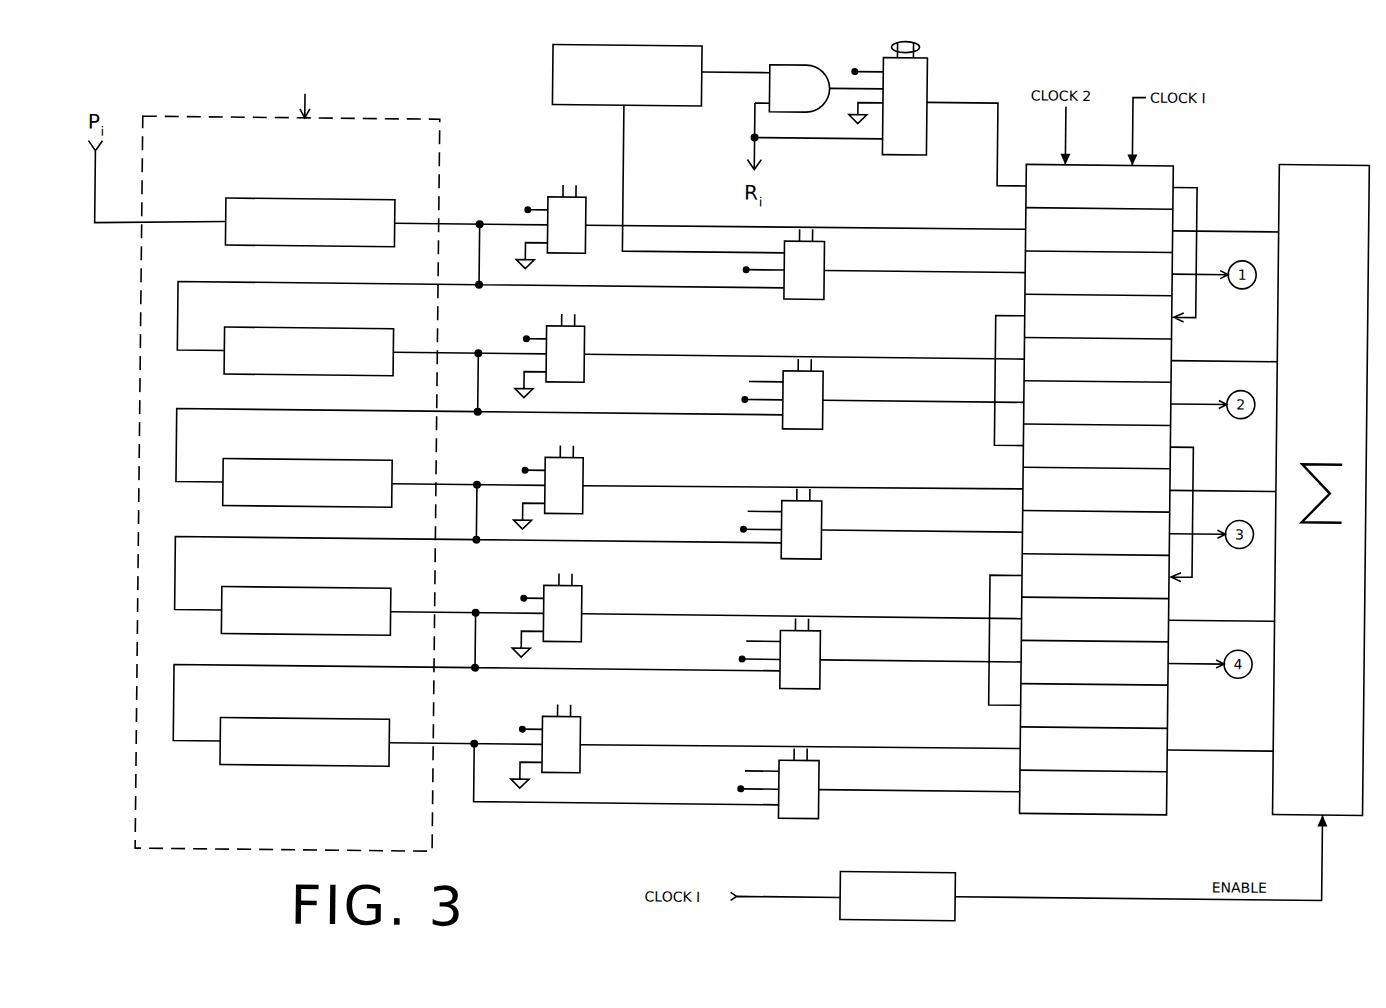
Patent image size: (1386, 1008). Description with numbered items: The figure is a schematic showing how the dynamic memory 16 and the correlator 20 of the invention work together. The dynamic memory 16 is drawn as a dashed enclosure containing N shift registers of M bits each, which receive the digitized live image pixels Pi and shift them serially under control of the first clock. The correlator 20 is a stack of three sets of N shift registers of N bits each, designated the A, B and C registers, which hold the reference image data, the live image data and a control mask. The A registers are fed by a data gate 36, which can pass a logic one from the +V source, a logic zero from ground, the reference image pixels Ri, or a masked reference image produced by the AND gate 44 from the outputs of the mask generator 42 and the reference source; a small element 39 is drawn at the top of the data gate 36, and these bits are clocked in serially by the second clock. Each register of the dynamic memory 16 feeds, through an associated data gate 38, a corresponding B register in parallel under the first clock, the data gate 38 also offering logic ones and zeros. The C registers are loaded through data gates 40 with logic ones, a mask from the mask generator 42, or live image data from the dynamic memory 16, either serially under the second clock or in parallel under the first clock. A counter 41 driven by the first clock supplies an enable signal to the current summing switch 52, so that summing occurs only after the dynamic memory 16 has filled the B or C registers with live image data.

The dynamic memory 16 is at (392, 123).
The correlator 20 is at (1151, 60).
The data gate 36 is at (923, 78).
The data gate 38 is at (583, 252).
The jumper strap 39 is at (914, 44).
The data gate 40 is at (822, 296).
The counter 41 is at (931, 870).
The mask generator 42 is at (695, 46).
The AND gate 44 is at (805, 64).
The current summing switch 52 is at (1301, 158).